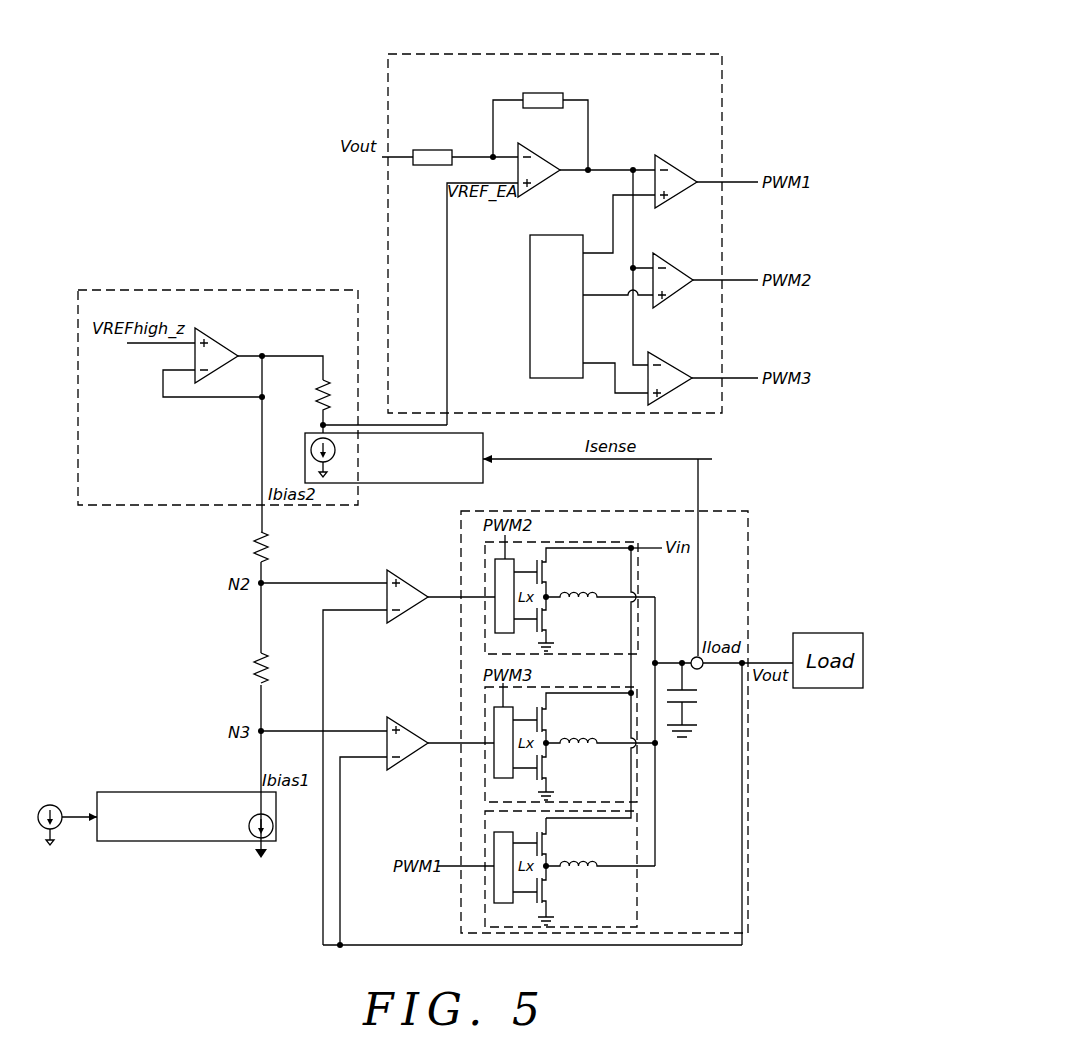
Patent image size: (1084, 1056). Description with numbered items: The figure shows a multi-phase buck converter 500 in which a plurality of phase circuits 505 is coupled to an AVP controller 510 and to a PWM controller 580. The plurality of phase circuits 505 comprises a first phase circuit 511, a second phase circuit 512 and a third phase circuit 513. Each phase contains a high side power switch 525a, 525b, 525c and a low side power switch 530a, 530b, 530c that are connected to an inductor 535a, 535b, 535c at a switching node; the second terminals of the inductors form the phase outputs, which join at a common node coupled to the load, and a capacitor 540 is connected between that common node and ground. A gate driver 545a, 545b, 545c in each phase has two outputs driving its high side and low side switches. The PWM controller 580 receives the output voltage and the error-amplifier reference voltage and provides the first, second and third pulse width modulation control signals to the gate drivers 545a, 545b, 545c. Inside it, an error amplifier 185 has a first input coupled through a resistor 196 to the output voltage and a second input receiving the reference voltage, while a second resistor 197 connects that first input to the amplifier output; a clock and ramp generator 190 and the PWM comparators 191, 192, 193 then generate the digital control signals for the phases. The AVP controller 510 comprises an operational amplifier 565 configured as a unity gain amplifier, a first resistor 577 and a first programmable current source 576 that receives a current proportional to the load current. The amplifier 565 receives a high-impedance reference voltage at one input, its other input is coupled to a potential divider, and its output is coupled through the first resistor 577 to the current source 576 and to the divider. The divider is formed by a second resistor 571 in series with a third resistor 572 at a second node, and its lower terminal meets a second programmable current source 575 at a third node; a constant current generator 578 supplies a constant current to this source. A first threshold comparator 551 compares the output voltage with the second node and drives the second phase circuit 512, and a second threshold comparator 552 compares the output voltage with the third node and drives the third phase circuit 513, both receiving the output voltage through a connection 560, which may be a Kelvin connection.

The multi-phase buck converter 500 is at (234, 943).
The plurality of phase circuits 505 is at (722, 511).
The AVP controller 510 is at (140, 290).
The first phase circuit 511 is at (485, 829).
The second phase circuit 512 is at (485, 560).
The third phase circuit 513 is at (485, 709).
The high side power switch 525a is at (550, 844).
The high side power switch 525b is at (550, 574).
The high side power switch 525c is at (550, 721).
The low side power switch 530a is at (550, 890).
The low side power switch 530b is at (550, 620).
The low side power switch 530c is at (550, 767).
The inductor 535a is at (576, 863).
The inductor 535b is at (576, 594).
The inductor 535c is at (576, 740).
The capacitor 540 is at (690, 704).
The gate driver 545a is at (494, 880).
The gate driver 545b is at (495, 615).
The gate driver 545c is at (494, 760).
The first threshold comparator 551 is at (412, 578).
The second threshold comparator 552 is at (412, 725).
The connection 560 is at (748, 880).
The operational amplifier 565 is at (220, 338).
The first resistor R2 571 is at (252, 548).
The second resistor R3 572 is at (252, 670).
The second programmable current source 575 is at (150, 792).
The first programmable current source 576 is at (483, 440).
The resistor R1 577 is at (310, 396).
The constant current generator 578 is at (50, 805).
The PWM controller 580 is at (722, 80).
The error amplifier 185 is at (544, 151).
The clock and ramp generator 190 is at (572, 324).
The PWM comparator 191 is at (680, 162).
The PWM comparator 192 is at (678, 260).
The PWM comparator 193 is at (673, 358).
The resistor 196 is at (430, 150).
The second resistor 197 is at (543, 93).